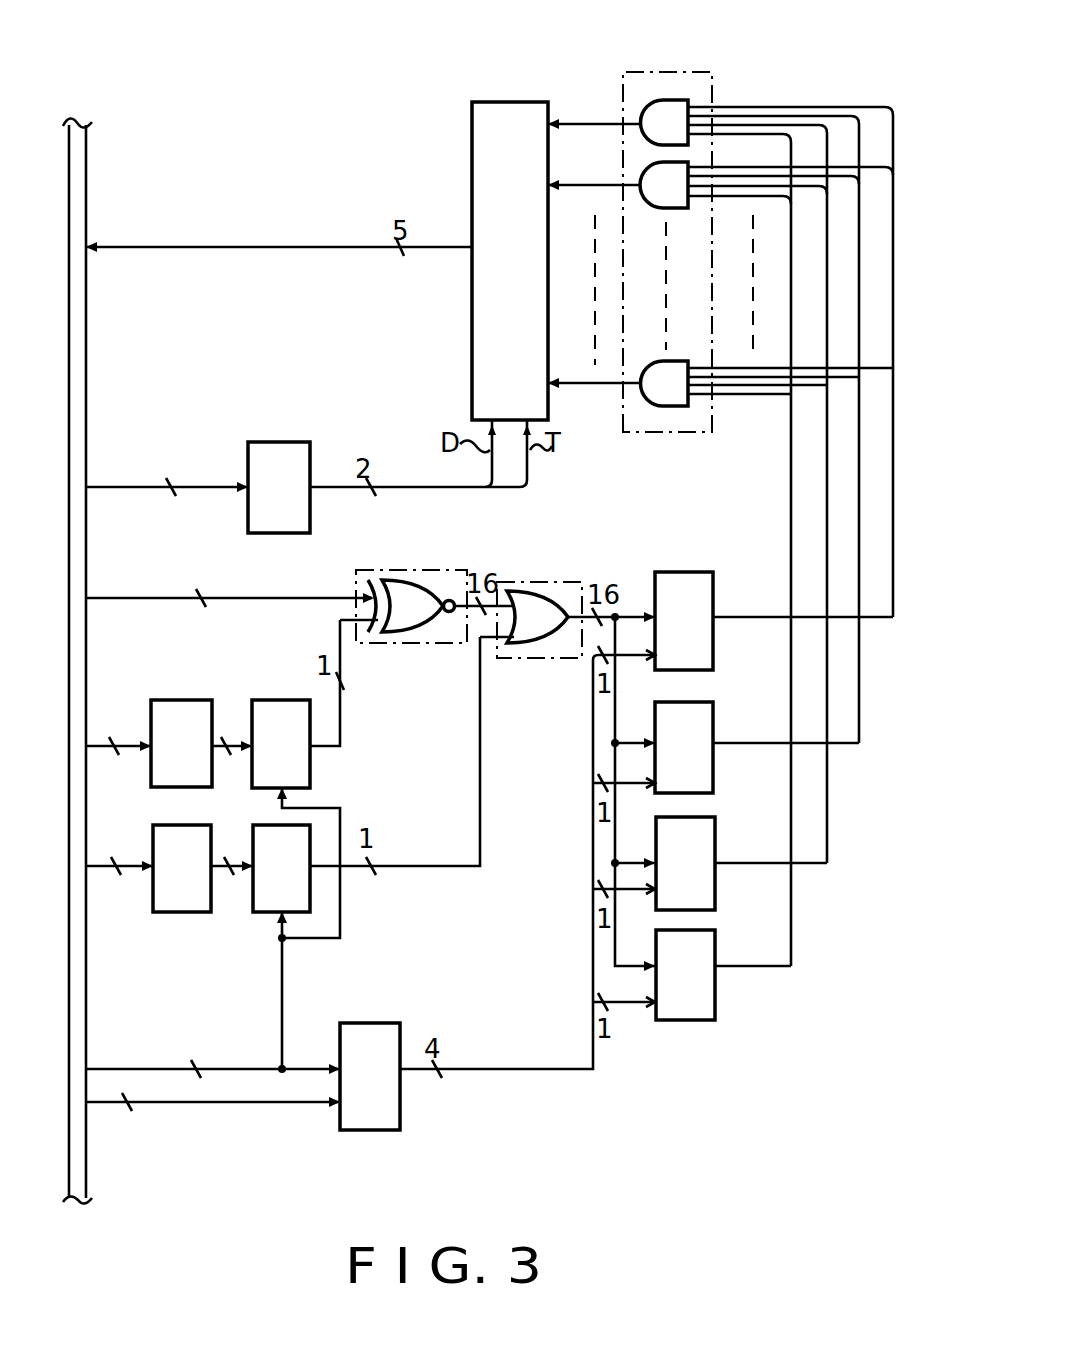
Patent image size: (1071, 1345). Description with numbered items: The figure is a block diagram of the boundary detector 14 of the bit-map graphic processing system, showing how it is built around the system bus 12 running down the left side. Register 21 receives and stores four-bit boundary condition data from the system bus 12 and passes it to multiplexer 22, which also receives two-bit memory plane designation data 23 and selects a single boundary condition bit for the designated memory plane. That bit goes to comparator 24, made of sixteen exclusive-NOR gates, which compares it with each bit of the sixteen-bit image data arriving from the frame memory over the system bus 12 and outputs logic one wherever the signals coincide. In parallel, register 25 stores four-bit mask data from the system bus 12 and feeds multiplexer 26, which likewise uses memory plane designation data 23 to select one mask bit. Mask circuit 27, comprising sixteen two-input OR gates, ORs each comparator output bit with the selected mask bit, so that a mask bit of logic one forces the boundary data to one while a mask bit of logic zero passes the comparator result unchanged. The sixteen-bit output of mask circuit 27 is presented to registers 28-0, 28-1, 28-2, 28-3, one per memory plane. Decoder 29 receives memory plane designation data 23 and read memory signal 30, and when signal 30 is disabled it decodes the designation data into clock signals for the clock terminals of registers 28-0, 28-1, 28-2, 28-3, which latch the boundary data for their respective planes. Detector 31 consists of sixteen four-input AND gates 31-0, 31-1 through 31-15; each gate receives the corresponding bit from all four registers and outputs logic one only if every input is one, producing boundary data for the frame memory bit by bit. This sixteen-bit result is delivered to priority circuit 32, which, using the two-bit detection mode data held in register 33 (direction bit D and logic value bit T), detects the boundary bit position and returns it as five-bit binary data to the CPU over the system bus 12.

The system bus 12 is at (90, 1158).
The boundary detector 14 is at (500, 1098).
The register 21 is at (176, 702).
The multiplexer 22 is at (266, 702).
The memory plane designation data 23 is at (222, 1069).
The comparator 24 is at (354, 594).
The register 25 is at (160, 914).
The multiplexer 26 is at (270, 914).
The mask circuit 27 is at (560, 590).
The register 28-0 is at (713, 637).
The register 28-1 is at (713, 760).
The register 28-2 is at (715, 876).
The register 28-3 is at (715, 982).
The decoder 29 is at (366, 1023).
The read memory signal 30 is at (234, 1104).
The detector 31 is at (708, 84).
The AND gate 31-0 is at (642, 112).
The AND gate 31-1 is at (642, 182).
The AND gate 31-15 is at (670, 360).
The priority circuit 32 is at (505, 102).
The register 33 is at (298, 443).